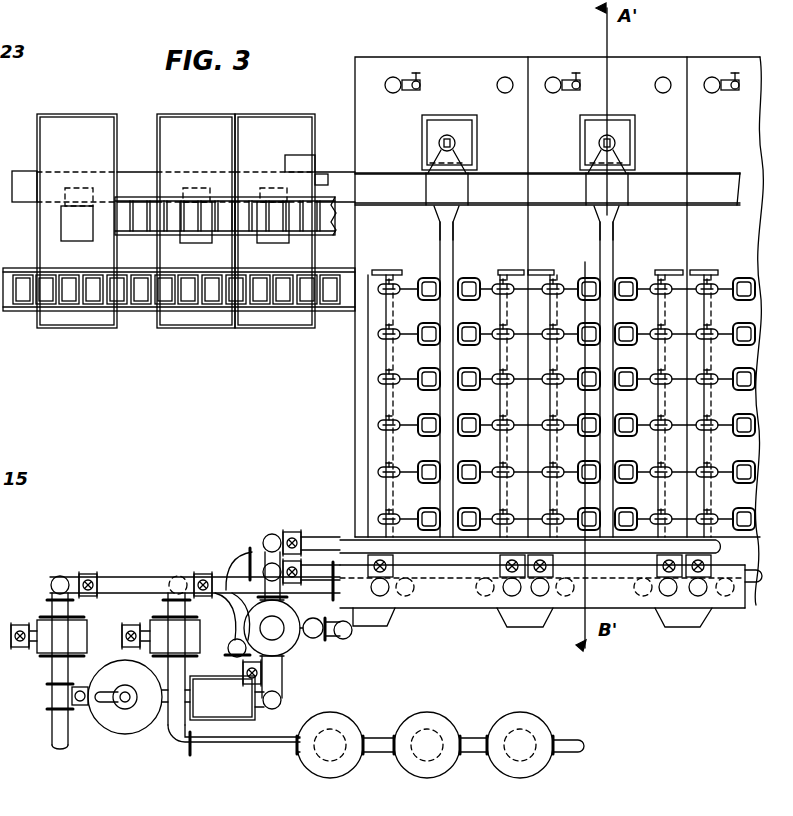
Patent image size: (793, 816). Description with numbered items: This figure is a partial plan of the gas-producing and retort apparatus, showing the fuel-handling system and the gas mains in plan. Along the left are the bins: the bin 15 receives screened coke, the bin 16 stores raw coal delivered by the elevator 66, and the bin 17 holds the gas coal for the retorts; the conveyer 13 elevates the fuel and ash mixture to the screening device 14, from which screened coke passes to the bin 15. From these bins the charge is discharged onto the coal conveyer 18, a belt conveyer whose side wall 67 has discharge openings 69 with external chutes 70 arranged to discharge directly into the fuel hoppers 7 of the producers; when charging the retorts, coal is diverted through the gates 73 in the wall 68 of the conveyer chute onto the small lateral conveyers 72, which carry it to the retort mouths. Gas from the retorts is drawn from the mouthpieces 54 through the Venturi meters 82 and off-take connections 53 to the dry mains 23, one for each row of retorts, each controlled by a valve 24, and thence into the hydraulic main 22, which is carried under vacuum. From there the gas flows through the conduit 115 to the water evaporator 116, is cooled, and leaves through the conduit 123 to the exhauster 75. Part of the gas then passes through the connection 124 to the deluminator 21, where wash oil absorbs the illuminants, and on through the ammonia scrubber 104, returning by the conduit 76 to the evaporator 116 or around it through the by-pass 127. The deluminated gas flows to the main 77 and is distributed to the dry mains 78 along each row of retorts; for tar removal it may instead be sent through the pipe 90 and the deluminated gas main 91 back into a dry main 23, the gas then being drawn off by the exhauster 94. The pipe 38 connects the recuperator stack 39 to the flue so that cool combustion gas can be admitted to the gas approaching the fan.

The fuel hopper 7 is at (476, 146).
The conveyer 13 is at (167, 218).
The screening device 14 is at (300, 159).
The bin 15 is at (275, 221).
The bin 16 is at (196, 221).
The bin 17 is at (77, 221).
The coal conveyer 18 is at (547, 189).
The deluminator 21 is at (134, 732).
The hydraulic main 22 is at (450, 609).
The dry main 23 is at (408, 264).
The valve 24 is at (662, 572).
The pipe 38 is at (420, 82).
The stack 39 is at (553, 92).
The off-take connection 53 is at (384, 295).
The mouthpiece 54 is at (432, 370).
The elevator 66 is at (141, 297).
The side wall of the conveyer 67 is at (398, 173).
The wall of the conveyer chute 68 is at (400, 206).
The discharge opening 69 is at (618, 183).
The chute 70 is at (462, 163).
The lateral conveyer 72 is at (604, 237).
The gate 73 is at (600, 210).
The exhauster 75 is at (49, 671).
The conduit 76 is at (256, 573).
The main 77 is at (324, 578).
The dry main 78 is at (384, 492).
The Venturi meter 82 is at (392, 293).
The pipe 90 is at (268, 536).
The deluminated gas main 91 is at (530, 547).
The exhauster 94 is at (211, 674).
The ammonia scrubber 104 is at (208, 698).
The conduit 115 is at (336, 636).
The water evaporator 116 is at (272, 628).
The conduit 123 is at (238, 615).
The connection 124 is at (74, 690).
The by-pass 127 is at (230, 655).